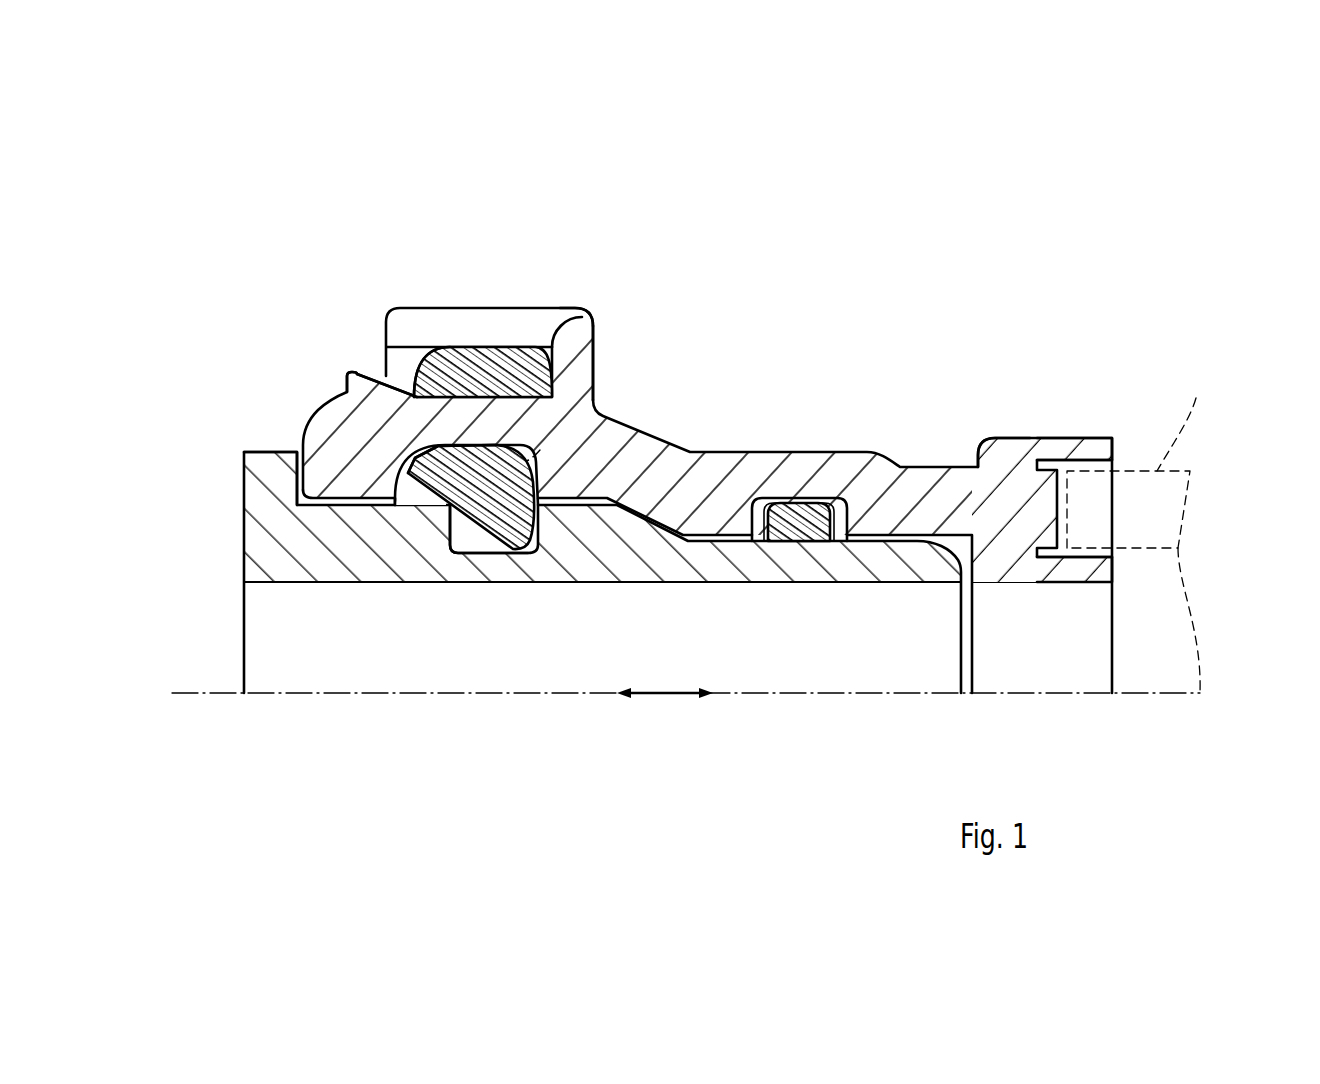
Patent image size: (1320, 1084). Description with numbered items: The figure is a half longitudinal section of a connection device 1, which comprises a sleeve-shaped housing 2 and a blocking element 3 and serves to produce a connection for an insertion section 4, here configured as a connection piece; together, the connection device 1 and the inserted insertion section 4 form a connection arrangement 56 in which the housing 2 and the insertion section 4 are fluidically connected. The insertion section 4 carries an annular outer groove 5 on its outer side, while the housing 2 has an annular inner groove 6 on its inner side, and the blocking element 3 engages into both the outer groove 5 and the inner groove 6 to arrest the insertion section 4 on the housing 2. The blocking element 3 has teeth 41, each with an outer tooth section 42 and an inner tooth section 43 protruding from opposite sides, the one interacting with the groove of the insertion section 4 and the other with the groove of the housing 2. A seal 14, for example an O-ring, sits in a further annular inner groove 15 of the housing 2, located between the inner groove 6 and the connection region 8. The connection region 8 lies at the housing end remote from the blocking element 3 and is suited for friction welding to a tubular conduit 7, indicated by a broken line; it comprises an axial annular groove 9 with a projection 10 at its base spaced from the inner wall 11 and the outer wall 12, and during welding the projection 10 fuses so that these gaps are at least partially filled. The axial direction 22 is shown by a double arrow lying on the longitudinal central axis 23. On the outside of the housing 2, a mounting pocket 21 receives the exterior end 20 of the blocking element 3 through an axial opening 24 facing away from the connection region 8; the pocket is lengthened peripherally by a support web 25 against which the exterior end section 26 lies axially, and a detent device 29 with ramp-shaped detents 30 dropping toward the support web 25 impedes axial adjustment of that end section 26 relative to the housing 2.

The connection device 1 is at (1054, 295).
The housing 2 is at (742, 437).
The blocking element 3 is at (478, 540).
The insertion section 4 is at (228, 517).
The outer groove 5 is at (435, 533).
The inner groove 6 is at (600, 408).
The conduit 7 is at (1181, 535).
The connection region 8 is at (1005, 425).
The axial annular groove 9 is at (1095, 515).
The projection 10 is at (1057, 512).
The inner wall 11 is at (1103, 572).
The outer wall 12 is at (1098, 450).
The seal 14 is at (790, 518).
The further annular inner groove 15 is at (863, 513).
The end lying on the exterior 20 is at (490, 360).
The mounting pocket 21 is at (417, 352).
The axial direction 22 is at (662, 697).
The longitudinal central axis 23 is at (397, 697).
The axial opening 24 is at (392, 358).
The support web 25 is at (583, 367).
The end section lying on the exterior 26 is at (520, 344).
The detent device 29 is at (332, 376).
The detent 30 is at (350, 370).
The teeth 41 is at (457, 457).
The outer tooth section 42 is at (527, 548).
The inner tooth section 43 is at (422, 462).
The connection arrangement 56 is at (1178, 274).